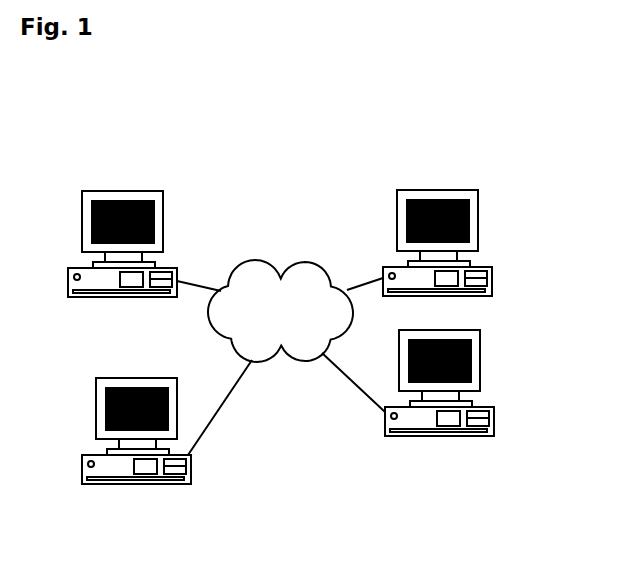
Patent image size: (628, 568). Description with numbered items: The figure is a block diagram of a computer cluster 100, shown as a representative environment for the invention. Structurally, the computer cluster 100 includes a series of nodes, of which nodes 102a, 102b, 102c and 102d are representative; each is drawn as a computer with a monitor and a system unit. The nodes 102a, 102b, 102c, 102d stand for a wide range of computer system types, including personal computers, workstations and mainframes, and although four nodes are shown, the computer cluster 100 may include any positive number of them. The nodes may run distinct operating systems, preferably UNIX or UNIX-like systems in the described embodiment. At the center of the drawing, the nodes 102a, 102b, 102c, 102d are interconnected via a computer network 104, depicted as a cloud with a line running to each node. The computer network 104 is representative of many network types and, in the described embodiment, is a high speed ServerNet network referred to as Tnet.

The computer cluster 100 is at (594, 105).
The node 102a is at (435, 188).
The node 102b is at (440, 435).
The node 102c is at (138, 485).
The node 102d is at (122, 190).
The computer network 104 is at (247, 262).